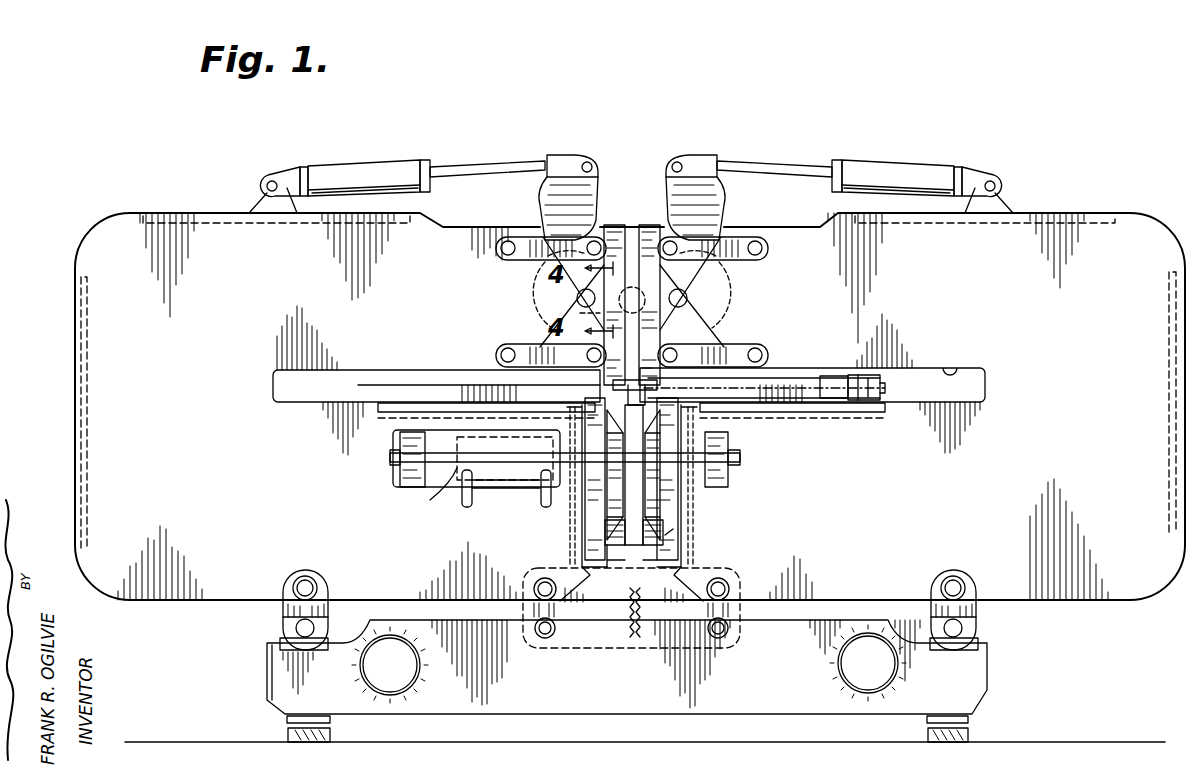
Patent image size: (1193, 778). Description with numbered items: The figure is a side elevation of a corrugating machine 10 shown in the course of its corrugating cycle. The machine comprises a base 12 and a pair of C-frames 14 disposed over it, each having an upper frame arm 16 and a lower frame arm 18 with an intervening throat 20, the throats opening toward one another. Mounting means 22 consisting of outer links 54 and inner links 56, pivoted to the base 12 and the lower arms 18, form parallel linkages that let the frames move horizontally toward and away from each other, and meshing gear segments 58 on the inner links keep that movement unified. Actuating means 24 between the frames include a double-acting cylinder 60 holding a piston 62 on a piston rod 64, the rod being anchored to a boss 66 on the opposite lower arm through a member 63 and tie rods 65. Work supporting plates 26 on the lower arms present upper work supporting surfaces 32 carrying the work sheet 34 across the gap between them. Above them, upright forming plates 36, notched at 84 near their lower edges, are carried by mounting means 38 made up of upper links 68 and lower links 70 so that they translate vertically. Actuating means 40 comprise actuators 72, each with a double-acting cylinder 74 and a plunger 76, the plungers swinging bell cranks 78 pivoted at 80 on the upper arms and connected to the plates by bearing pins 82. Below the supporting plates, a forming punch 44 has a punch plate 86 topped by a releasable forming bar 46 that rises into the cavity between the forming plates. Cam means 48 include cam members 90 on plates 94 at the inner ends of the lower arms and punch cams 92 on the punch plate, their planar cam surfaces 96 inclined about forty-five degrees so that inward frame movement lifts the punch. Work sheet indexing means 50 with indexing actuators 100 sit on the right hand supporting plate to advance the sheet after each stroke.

The corrugating machine 10 is at (155, 184).
The base 12 is at (262, 660).
The C-frames 14 is at (75, 332).
The upper frame arms 16 is at (612, 278).
The lower frame arms 18 is at (613, 539).
The throats 20 is at (315, 400).
The mounting means 22 is at (290, 571).
The actuating means 24 is at (525, 488).
The work supporting plates 26 is at (497, 384).
The upper work supporting surfaces 32 is at (517, 368).
The work sheet 34 is at (384, 384).
The forming plates 36 is at (614, 224).
The mounting means 38 is at (492, 248).
The actuating means 40 is at (631, 150).
The forming punch 44 is at (665, 455).
The forming bar 46 is at (647, 386).
The cam means 48 is at (665, 530).
The work sheet indexing means 50 is at (847, 373).
The outer links 54 is at (293, 616).
The inner links 56 is at (538, 605).
The gear segments 58 is at (628, 608).
The double-acting cylinder 60 is at (458, 472).
The piston 62 is at (505, 491).
The member 63 is at (394, 458).
The piston rod 64 is at (423, 470).
The tie rods 65 is at (560, 490).
The boss 66 is at (740, 460).
The upper links 68 is at (538, 244).
The lower links 70 is at (555, 318).
The actuators 72 is at (310, 168).
The double-acting cylinder 74 is at (385, 174).
The plunger 76 is at (506, 162).
The bell cranks 78 is at (568, 204).
The pivot 80 is at (576, 300).
The bearing pins 82 is at (568, 318).
The notch 84 is at (607, 370).
The punch plate 86 is at (625, 537).
The cam members 90 is at (651, 543).
The punch cams 92 is at (660, 522).
The plates 94 is at (665, 545).
The planar cam surfaces 96 is at (608, 530).
The indexing actuators 100 is at (834, 400).